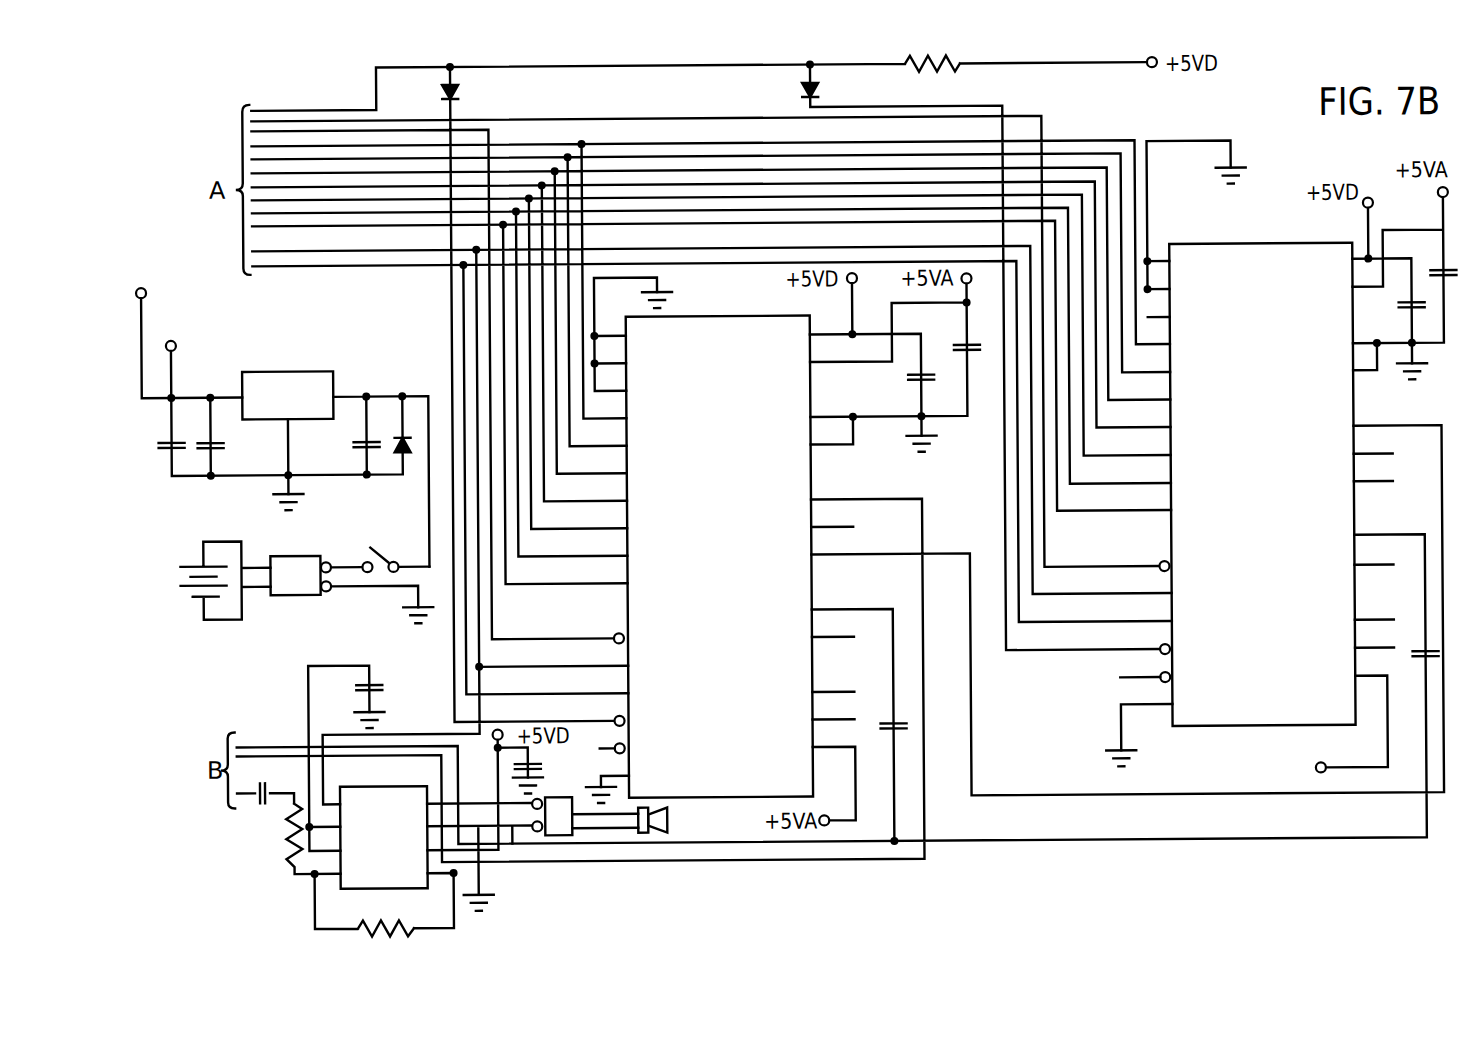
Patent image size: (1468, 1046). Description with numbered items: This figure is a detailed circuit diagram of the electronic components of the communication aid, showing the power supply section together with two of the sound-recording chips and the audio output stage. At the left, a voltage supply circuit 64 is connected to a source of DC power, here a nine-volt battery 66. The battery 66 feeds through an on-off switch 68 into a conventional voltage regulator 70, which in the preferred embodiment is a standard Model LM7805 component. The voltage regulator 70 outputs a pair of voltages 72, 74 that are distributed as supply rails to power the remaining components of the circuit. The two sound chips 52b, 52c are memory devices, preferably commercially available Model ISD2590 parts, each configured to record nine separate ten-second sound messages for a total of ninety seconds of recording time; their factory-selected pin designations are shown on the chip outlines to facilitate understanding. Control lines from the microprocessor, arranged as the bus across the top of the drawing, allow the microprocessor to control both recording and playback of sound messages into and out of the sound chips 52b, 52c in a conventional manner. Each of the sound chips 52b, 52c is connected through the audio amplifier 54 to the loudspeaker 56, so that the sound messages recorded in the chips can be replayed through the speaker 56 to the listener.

The sound chip 52b is at (707, 330).
The sound chip 52c is at (1245, 262).
The audio amplifier 54 is at (380, 883).
The loudspeaker 56 is at (654, 832).
The voltage supply circuit 64 is at (279, 382).
The 9-volt battery 66 is at (191, 563).
The on-off switch 68 is at (366, 545).
The voltage regulator 70 is at (273, 379).
The voltage 72 is at (192, 313).
The voltage 74 is at (164, 256).